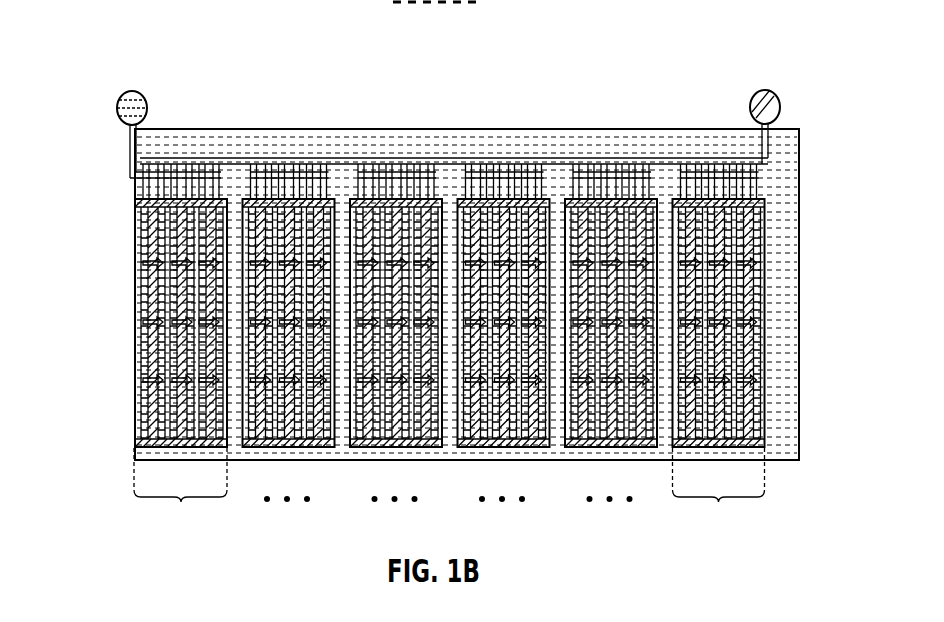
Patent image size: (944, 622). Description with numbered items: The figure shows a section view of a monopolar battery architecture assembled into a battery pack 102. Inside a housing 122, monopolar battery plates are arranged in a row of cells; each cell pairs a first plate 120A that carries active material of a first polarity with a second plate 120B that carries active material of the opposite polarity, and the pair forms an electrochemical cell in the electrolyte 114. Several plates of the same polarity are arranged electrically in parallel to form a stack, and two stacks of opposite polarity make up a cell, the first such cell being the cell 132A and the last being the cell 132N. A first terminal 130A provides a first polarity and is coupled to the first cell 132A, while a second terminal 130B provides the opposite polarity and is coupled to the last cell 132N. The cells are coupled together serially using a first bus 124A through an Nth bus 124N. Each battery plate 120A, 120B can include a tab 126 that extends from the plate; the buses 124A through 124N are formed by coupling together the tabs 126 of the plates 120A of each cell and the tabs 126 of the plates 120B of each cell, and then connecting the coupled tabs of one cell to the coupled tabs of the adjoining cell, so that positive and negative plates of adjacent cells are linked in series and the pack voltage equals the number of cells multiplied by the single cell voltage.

The battery pack 102 is at (203, 28).
The electrolyte 114 is at (172, 158).
The first battery plate 120A is at (150, 282).
The second battery plate 120B is at (150, 338).
The housing 122 is at (536, 157).
The first bus 124A is at (246, 160).
The Nth bus 124N is at (676, 160).
The tab 126 is at (176, 196).
The first terminal 130A is at (126, 90).
The second terminal 130B is at (776, 92).
The first cell 132A is at (180, 366).
The last cell 132N is at (719, 366).